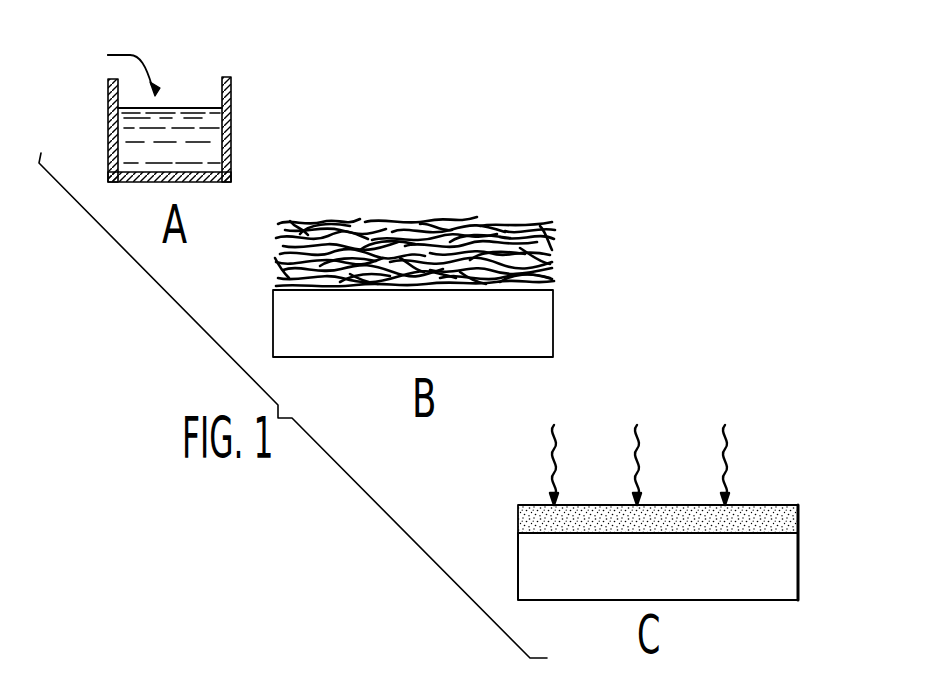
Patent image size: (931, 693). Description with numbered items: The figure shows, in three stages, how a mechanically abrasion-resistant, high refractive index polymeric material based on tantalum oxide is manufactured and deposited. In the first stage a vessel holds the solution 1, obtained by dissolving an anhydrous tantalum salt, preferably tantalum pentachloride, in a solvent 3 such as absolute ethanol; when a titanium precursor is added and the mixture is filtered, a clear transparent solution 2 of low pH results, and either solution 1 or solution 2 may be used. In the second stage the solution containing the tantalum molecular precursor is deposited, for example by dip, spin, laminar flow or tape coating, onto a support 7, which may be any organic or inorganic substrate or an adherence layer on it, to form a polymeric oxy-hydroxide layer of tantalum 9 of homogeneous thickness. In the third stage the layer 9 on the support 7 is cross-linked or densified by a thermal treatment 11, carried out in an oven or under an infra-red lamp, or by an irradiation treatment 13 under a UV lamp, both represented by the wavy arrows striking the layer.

The solution 1 is at (108, 55).
The solution 2 is at (108, 55).
The solvent 3 is at (215, 133).
The support 7 is at (550, 317).
The polymeric oxy-hydroxide layer of tantalum 9 is at (543, 233).
The thermal treatment 11 is at (725, 432).
The irradiation treatment 13 is at (639, 465).